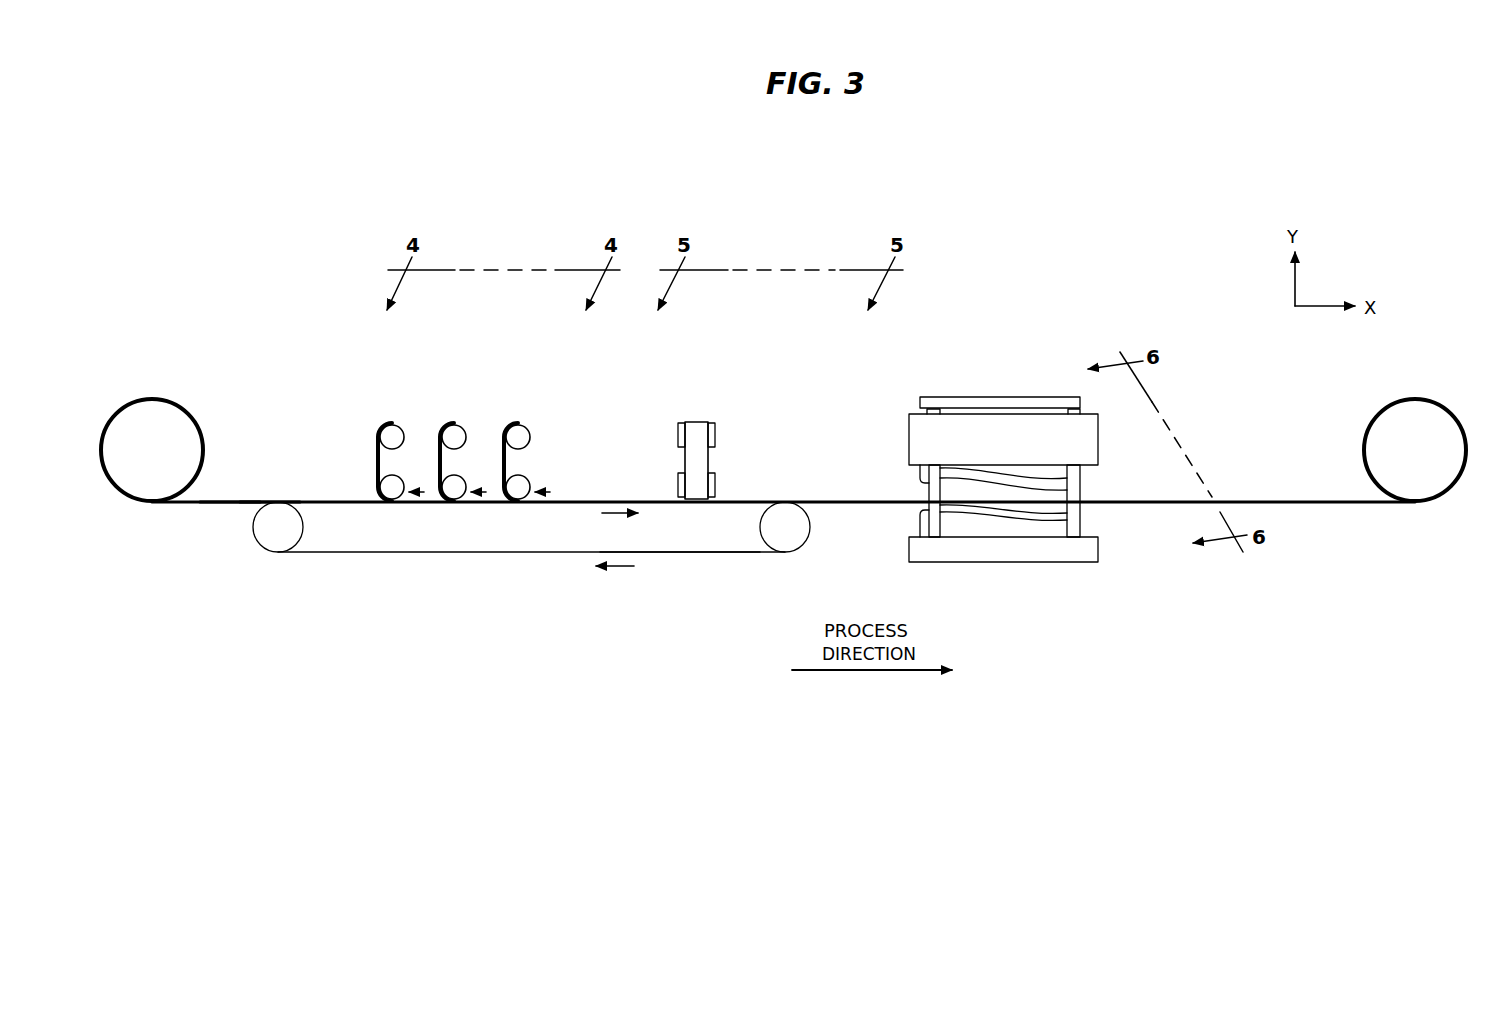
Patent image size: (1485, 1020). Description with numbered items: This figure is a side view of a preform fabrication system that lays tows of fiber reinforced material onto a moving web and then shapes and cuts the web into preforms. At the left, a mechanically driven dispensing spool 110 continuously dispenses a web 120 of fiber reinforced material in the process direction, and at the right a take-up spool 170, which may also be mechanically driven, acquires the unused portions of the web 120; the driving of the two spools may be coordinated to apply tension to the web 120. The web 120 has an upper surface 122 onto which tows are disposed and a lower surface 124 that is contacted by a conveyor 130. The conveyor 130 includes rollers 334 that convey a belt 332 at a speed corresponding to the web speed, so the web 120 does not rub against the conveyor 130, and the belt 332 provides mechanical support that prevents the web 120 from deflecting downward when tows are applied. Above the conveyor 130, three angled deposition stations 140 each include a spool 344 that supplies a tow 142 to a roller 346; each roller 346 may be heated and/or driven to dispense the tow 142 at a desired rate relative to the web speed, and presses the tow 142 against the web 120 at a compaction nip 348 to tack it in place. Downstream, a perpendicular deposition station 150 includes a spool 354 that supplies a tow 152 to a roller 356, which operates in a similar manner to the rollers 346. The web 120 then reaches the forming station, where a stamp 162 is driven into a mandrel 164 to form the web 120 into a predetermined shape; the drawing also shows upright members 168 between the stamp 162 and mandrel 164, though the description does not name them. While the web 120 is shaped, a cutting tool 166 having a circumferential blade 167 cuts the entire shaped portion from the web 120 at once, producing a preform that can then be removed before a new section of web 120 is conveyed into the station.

The dispensing spool 110 is at (141, 411).
The web 120 is at (215, 500).
The surface 122 is at (252, 496).
The surface 124 is at (240, 509).
The conveyor 130 is at (415, 559).
The angled deposition station 140 is at (460, 443).
The tow 142 is at (376, 470).
The perpendicular deposition station 150 is at (709, 422).
The tow 152 is at (679, 458).
The stamp 162 is at (921, 400).
The mandrel 164 is at (916, 550).
The cutting tool 166 is at (922, 438).
The circumferential blade 167 is at (918, 470).
The support column 168 is at (1081, 480).
The take-up spool 170 is at (1428, 480).
The belt 332 is at (667, 550).
The rollers 334 is at (276, 545).
The spool 344 is at (393, 436).
The roller 346 is at (394, 487).
The compaction nip 348 is at (426, 503).
The spool 354 is at (716, 428).
The roller 356 is at (716, 484).